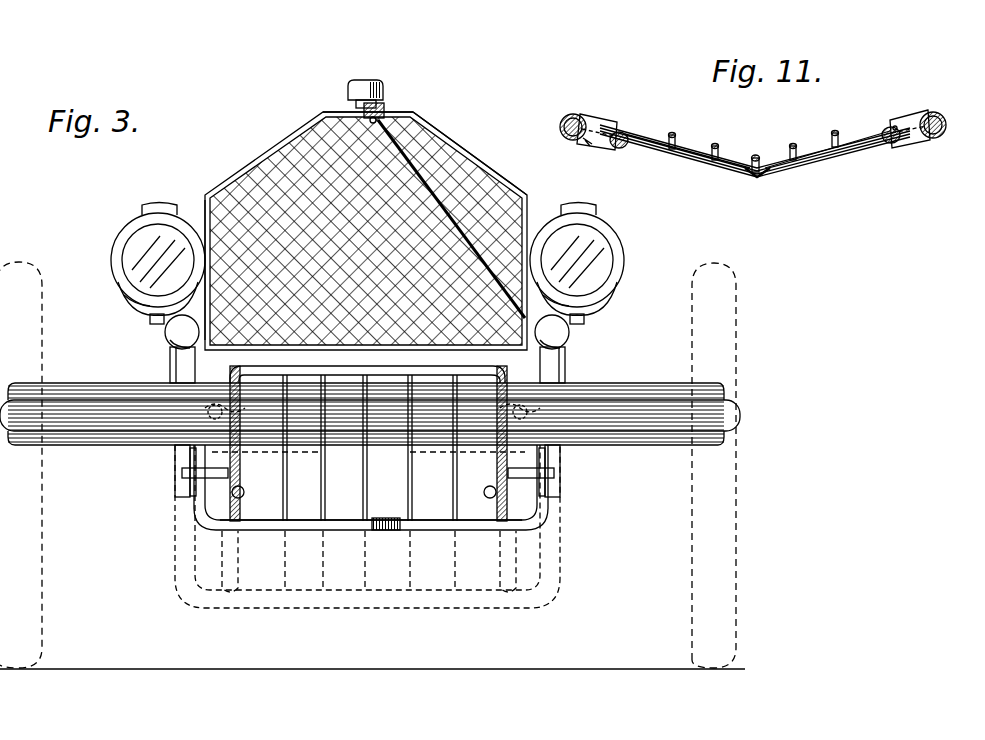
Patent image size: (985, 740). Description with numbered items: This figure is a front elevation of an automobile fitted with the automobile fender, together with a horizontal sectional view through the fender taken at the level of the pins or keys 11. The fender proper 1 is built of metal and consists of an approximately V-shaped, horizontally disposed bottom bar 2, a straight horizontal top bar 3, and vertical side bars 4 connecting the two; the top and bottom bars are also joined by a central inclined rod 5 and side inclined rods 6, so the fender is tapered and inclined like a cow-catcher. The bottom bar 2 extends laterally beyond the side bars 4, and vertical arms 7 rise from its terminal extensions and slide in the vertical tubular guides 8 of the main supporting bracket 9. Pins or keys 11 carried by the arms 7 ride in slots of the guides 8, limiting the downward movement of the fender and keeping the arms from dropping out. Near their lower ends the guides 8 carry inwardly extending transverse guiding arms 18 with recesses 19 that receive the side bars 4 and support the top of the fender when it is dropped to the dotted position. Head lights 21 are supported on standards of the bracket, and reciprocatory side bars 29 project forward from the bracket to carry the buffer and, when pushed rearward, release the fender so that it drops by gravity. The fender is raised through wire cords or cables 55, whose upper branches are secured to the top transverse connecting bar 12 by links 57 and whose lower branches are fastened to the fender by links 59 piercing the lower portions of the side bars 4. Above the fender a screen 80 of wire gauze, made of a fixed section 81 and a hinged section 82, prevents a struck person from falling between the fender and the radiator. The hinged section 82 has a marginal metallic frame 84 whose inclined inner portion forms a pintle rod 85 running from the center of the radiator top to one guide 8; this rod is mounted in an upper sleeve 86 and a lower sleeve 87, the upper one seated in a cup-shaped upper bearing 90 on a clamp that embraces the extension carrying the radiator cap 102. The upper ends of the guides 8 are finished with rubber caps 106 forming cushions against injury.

In FIG. 3, the fender proper 1 is at (402, 508).
In FIG. 11, the fender proper 1 is at (757, 187).
In FIG. 3, the bottom bar 2 is at (352, 532).
In FIG. 11, the bottom bar 2 is at (700, 168).
In FIG. 3, the top bar 3 is at (380, 365).
In FIG. 3, the side bars 4 is at (258, 455).
In FIG. 11, the side bars 4 is at (628, 136).
In FIG. 3, the central inclined rod 5 is at (362, 478).
In FIG. 11, the central inclined rod 5 is at (755, 154).
In FIG. 3, the side inclined rods 6 is at (320, 488).
In FIG. 11, the side inclined rods 6 is at (676, 135).
In FIG. 3, the vertical arms 7 is at (175, 535).
In FIG. 11, the vertical arms 7 is at (562, 116).
In FIG. 3, the tubular guides 8 is at (176, 455).
In FIG. 11, the tubular guides 8 is at (575, 113).
In FIG. 3, the main supporting bracket 9 is at (225, 410).
In FIG. 3, the pins or keys 11 is at (118, 450).
In FIG. 3, the top transverse connecting bar 12 is at (570, 362).
In FIG. 3, the guiding arms 18 is at (213, 500).
In FIG. 11, the guiding arms 18 is at (600, 118).
In FIG. 11, the recesses 19 is at (590, 146).
In FIG. 3, the head lights 21 is at (110, 256).
In FIG. 3, the reciprocatory side bars 29 is at (200, 408).
In FIG. 3, the wire cords or cables 55 is at (182, 472).
In FIG. 3, the links 57 is at (170, 375).
In FIG. 3, the links 59 is at (364, 494).
In FIG. 3, the screen 80 is at (245, 185).
In FIG. 3, the fixed section 81 is at (480, 124).
In FIG. 3, the hinged section 82 is at (213, 190).
In FIG. 3, the marginal metallic frame 84 is at (318, 118).
In FIG. 3, the pintle rod 85 is at (440, 140).
In FIG. 3, the upper eye or sleeve 86 is at (386, 110).
In FIG. 3, the lower eye or sleeve 87 is at (602, 285).
In FIG. 3, the upper bearing 90 is at (358, 108).
In FIG. 3, the radiator cap 102 is at (368, 80).
In FIG. 3, the caps 106 is at (166, 342).